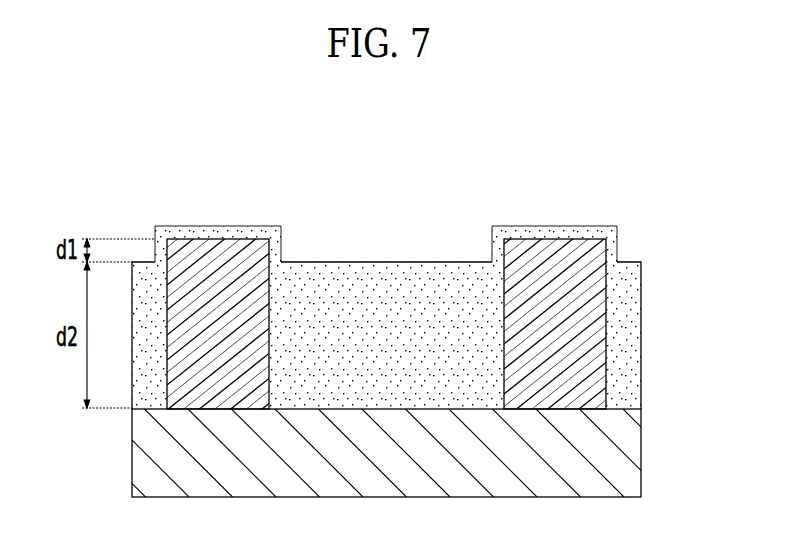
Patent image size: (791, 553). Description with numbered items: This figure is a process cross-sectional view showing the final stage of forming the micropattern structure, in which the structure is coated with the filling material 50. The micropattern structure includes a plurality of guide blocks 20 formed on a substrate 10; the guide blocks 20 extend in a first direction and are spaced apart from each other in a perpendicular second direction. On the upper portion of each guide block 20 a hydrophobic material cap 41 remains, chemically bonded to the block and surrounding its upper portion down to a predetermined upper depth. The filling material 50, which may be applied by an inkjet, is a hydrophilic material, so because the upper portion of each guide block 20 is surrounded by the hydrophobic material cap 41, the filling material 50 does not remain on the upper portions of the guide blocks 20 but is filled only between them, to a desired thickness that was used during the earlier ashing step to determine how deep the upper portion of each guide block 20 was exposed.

The substrate 10 is at (623, 453).
The guide block 20 is at (582, 298).
The hydrophobic material cap 41 is at (217, 232).
The filling material 50 is at (390, 273).